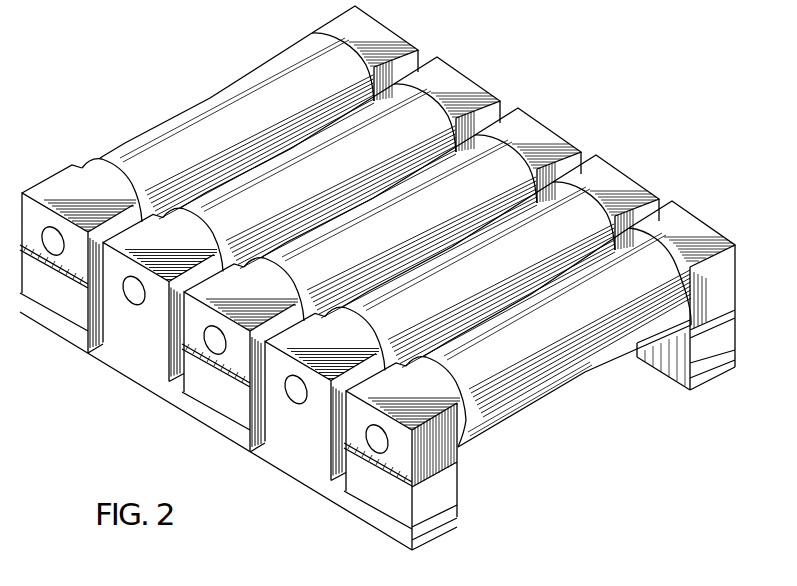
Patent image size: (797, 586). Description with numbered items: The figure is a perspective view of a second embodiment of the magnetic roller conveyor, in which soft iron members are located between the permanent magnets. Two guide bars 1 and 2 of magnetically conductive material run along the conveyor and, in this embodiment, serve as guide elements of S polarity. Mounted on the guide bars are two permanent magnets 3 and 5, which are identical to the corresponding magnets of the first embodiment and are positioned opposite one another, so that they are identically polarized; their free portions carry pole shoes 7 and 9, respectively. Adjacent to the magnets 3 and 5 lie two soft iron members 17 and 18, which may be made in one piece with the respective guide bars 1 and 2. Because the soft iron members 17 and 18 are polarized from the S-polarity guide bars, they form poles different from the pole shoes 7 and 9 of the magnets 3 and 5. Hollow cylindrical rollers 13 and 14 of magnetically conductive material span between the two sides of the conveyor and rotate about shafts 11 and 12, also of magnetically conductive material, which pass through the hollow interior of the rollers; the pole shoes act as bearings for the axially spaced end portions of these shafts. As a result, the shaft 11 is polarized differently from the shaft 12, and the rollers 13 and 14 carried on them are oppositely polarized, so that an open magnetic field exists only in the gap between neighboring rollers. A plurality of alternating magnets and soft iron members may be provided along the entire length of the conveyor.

The guide bar 1 is at (443, 518).
The guide bar 2 is at (727, 367).
The permanent magnet 3 is at (270, 357).
The permanent magnet 5 is at (722, 340).
The pole shoe 7 is at (466, 471).
The pole shoe 9 is at (723, 283).
The shaft 11 is at (385, 415).
The shaft 12 is at (302, 369).
The roller 13 is at (512, 172).
The roller 14 is at (598, 187).
The soft iron member 17 is at (244, 370).
The soft iron member 18 is at (537, 147).